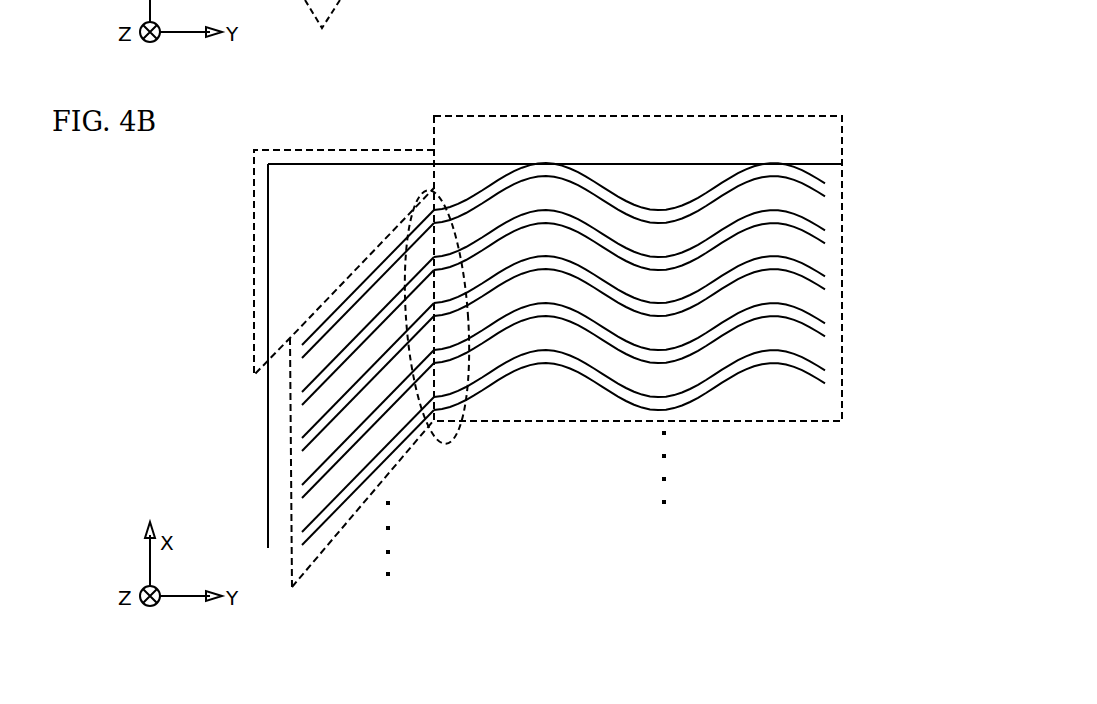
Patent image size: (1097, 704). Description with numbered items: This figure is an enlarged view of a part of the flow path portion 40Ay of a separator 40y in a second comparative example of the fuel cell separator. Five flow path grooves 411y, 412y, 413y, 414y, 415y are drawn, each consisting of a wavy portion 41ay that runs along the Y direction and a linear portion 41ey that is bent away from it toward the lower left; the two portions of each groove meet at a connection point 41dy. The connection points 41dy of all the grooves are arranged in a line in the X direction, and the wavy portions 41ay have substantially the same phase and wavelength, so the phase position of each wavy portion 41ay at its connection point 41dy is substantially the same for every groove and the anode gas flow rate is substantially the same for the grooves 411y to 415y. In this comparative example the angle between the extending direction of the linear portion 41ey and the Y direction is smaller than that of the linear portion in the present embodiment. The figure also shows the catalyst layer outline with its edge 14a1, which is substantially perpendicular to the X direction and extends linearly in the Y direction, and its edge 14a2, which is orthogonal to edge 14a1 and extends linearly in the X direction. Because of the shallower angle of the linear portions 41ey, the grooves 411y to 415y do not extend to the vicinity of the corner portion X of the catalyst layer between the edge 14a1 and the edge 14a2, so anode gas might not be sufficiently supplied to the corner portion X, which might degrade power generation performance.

The edge 14a1 is at (840, 160).
The edge 14a2 is at (268, 461).
The corner portion X is at (337, 150).
The separator 40y is at (863, 62).
The flow path portion 40Ay is at (880, 110).
The wavy portion 41ay is at (577, 116).
The connection point 41dy is at (447, 432).
The linear portion 41ey is at (322, 546).
The groove 411y is at (830, 173).
The groove 412y is at (830, 220).
The groove 413y is at (830, 268).
The groove 414y is at (830, 315).
The groove 415y is at (830, 362).